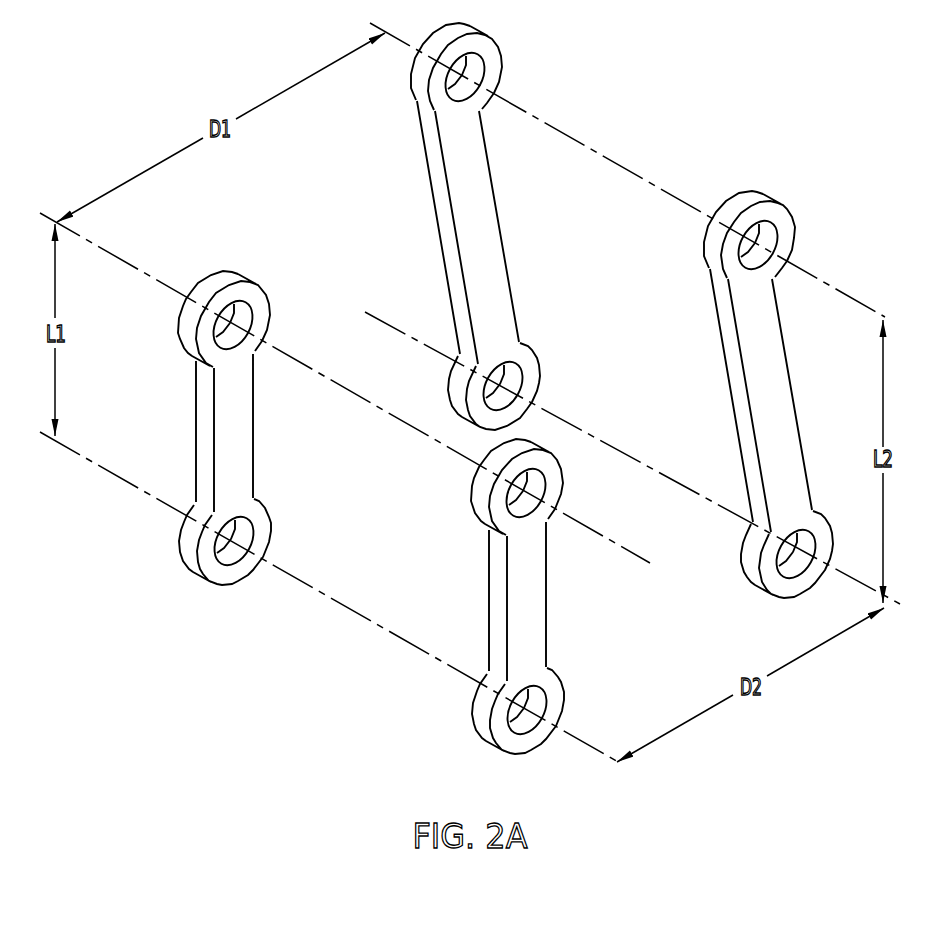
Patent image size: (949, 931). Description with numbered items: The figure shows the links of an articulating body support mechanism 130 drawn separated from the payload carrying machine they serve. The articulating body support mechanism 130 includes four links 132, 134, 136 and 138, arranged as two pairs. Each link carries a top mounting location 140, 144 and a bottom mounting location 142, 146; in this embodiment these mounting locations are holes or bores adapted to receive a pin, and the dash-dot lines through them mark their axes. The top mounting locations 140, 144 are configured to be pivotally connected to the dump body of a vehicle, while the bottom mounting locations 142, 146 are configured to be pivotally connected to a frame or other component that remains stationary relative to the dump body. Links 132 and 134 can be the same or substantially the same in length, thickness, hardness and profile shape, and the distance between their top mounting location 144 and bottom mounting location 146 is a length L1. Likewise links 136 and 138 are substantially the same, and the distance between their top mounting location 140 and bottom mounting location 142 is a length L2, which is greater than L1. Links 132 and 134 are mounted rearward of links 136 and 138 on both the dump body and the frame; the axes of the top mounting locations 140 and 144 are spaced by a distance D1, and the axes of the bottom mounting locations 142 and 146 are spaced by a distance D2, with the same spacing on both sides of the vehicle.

The articulating body support mechanism 130 is at (490, 395).
The link 132 is at (253, 424).
The link 134 is at (547, 596).
The link 136 is at (497, 228).
The link 138 is at (794, 390).
The top mounting location 140 is at (449, 77).
The bottom mounting location 142 is at (497, 385).
The top mounting location 144 is at (229, 318).
The bottom mounting location 146 is at (204, 566).